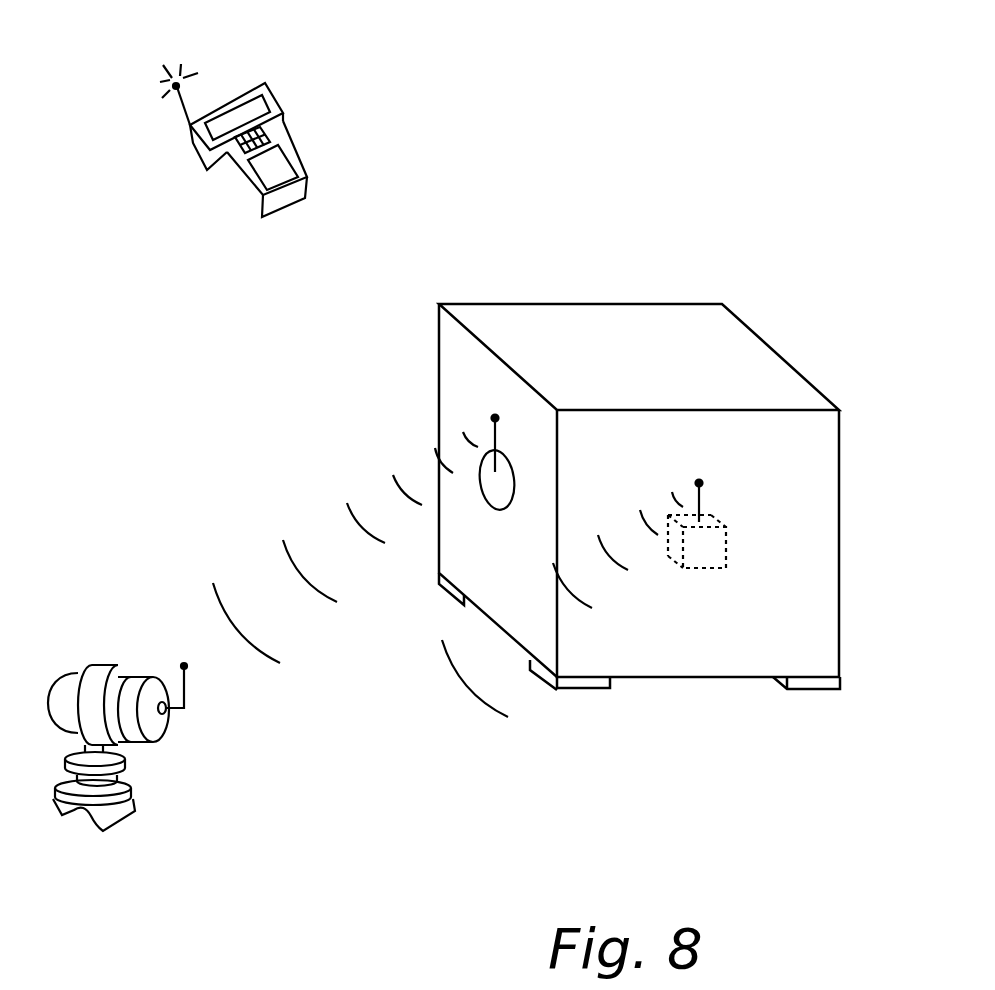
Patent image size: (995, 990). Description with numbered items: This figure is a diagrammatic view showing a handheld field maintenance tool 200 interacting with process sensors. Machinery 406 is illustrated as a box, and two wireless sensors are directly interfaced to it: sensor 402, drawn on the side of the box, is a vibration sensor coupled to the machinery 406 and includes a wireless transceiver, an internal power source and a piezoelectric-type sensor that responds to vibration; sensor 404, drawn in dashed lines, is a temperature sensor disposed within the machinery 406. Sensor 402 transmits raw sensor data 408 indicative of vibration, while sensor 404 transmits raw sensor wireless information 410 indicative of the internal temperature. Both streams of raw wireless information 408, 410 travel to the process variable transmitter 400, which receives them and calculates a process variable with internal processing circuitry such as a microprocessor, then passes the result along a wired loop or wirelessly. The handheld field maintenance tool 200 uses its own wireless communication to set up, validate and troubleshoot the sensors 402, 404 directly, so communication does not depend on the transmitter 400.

The handheld field maintenance tool 200 is at (277, 103).
The process variable transmitter 400 is at (118, 655).
The wireless sensor 402 is at (477, 494).
The wireless sensor 404 is at (698, 568).
The machinery 406 is at (840, 563).
The raw sensor data 408 is at (396, 484).
The raw sensor wireless information 410 is at (488, 707).